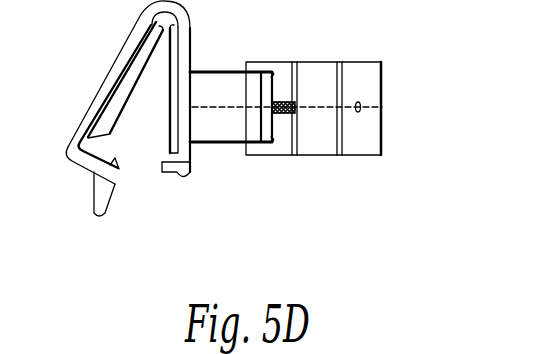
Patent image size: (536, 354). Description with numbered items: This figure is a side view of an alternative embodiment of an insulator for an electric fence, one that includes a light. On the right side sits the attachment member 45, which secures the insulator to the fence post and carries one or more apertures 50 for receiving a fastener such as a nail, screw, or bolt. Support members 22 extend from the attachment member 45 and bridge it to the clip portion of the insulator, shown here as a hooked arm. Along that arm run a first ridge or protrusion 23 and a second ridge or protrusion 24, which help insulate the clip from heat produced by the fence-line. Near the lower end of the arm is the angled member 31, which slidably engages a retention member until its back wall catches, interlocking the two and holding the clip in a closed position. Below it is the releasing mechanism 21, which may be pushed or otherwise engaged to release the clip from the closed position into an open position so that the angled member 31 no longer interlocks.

The releasing mechanism 21 is at (95, 215).
The support members 22 is at (105, 75).
The first ridge or protrusion 23 is at (145, 52).
The second ridge or protrusion 24 is at (170, 115).
The angled member 31 is at (118, 168).
The attachment member 45 is at (356, 62).
The apertures 50 is at (362, 106).